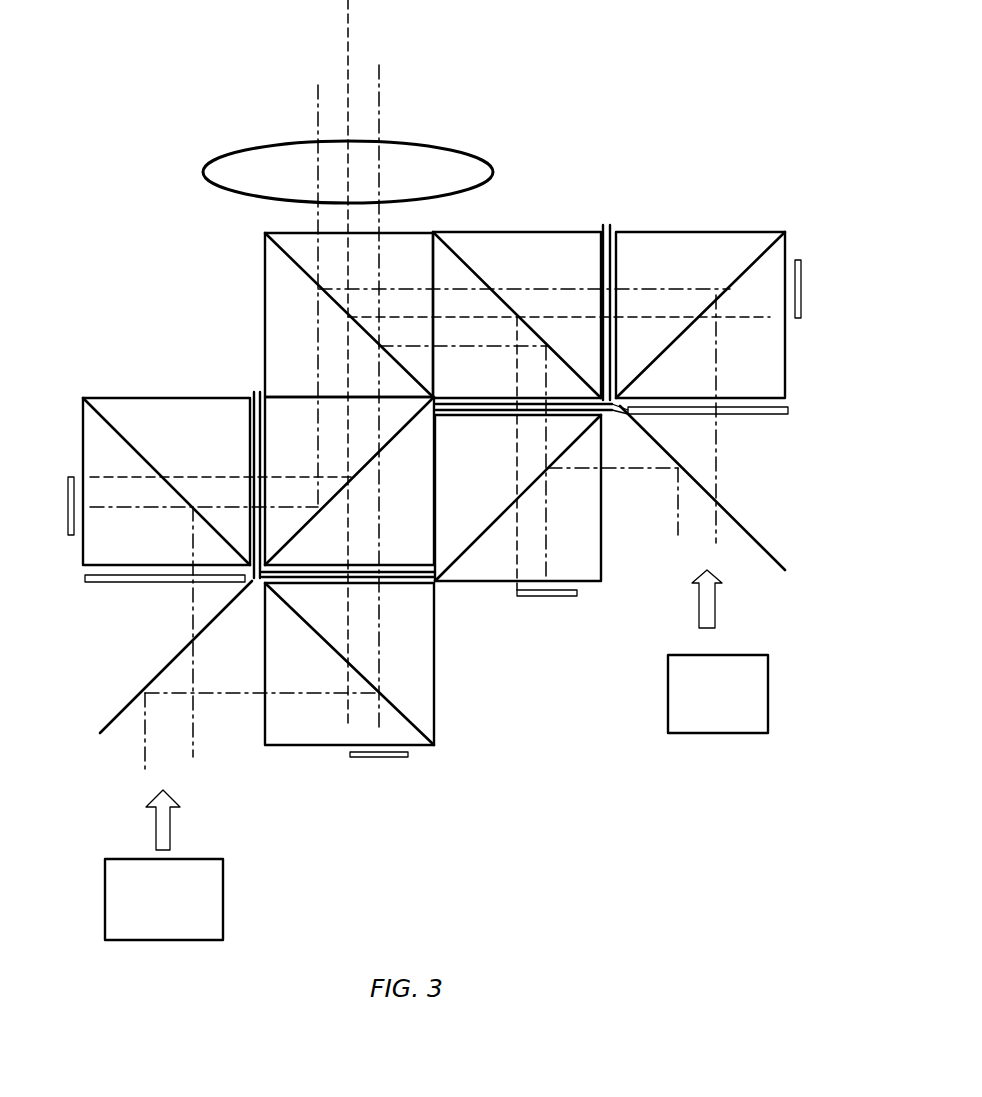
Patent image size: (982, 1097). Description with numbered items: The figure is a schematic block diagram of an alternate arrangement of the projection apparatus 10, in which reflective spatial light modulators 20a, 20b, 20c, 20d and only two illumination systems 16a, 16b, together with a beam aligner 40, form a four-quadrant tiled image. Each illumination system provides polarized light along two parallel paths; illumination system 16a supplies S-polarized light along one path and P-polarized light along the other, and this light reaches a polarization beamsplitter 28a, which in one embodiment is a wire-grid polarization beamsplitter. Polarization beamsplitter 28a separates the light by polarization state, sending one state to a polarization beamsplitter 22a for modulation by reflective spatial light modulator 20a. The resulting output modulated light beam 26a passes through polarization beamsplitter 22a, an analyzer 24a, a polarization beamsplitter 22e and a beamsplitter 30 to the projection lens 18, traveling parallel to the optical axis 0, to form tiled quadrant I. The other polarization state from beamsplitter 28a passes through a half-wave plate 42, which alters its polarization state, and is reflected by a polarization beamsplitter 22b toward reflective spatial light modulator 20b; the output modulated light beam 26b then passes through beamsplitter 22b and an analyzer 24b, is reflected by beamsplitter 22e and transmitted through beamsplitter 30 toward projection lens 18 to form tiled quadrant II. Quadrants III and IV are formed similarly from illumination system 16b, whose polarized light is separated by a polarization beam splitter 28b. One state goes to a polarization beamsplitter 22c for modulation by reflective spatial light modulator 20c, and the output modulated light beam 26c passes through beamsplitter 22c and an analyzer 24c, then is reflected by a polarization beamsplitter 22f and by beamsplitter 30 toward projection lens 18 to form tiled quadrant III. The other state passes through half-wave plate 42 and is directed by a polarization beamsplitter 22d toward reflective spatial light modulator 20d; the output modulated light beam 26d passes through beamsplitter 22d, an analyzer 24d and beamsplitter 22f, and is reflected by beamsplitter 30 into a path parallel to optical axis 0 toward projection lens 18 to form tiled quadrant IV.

The optical axis 0 is at (348, 62).
The projection apparatus 10 is at (682, 128).
The projection lens 18 is at (423, 142).
The polarization beamsplitter 22a is at (434, 692).
The polarization beamsplitter 22b is at (150, 397).
The polarization beamsplitter 22c is at (602, 492).
The polarization beamsplitter 22d is at (676, 231).
The polarization beamsplitter 22e is at (300, 397).
The polarization beamsplitter 22f is at (498, 231).
The beamsplitter 30 is at (265, 272).
The analyzer 24a is at (252, 586).
The analyzer 24b is at (255, 396).
The analyzer 24c is at (560, 400).
The analyzer 24d is at (608, 228).
The reflective spatial light modulator 20a is at (363, 757).
The reflective spatial light modulator 20b is at (68, 485).
The reflective spatial light modulator 20c is at (533, 600).
The reflective spatial light modulator 20d is at (800, 262).
The half-wave plate 42 is at (88, 584).
The polarization beamsplitter 28a is at (135, 698).
The polarization beam splitter 28b is at (750, 532).
The output modulated light beam 26a is at (377, 643).
The output modulated light beam 26b is at (168, 508).
The output modulated light beam 26c is at (546, 552).
The output modulated light beam 26d is at (735, 290).
The beam aligner 40 is at (760, 232).
The illumination system 16a is at (105, 880).
The illumination system 16b is at (770, 683).
The tiled quadrant I is at (389, 777).
The tiled quadrant II is at (39, 545).
The tiled quadrant III is at (566, 622).
The tiled quadrant IV is at (835, 327).